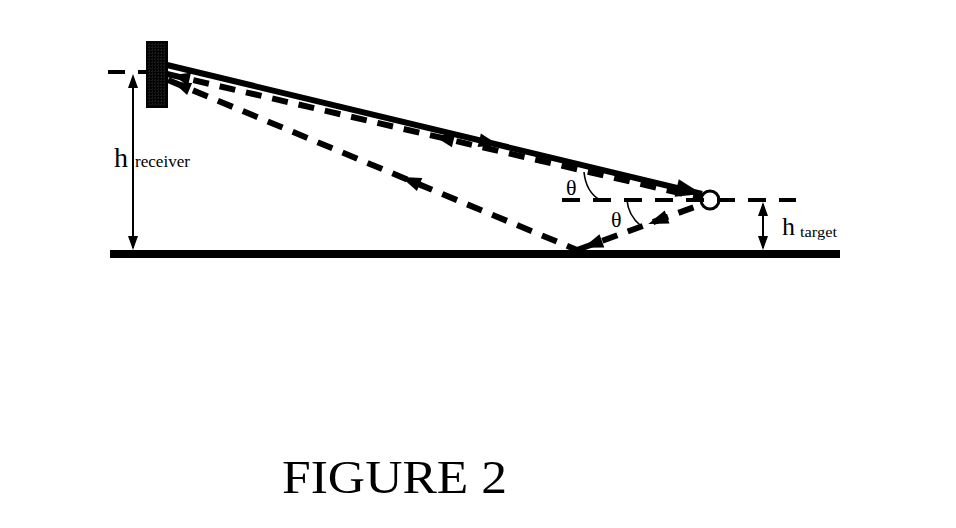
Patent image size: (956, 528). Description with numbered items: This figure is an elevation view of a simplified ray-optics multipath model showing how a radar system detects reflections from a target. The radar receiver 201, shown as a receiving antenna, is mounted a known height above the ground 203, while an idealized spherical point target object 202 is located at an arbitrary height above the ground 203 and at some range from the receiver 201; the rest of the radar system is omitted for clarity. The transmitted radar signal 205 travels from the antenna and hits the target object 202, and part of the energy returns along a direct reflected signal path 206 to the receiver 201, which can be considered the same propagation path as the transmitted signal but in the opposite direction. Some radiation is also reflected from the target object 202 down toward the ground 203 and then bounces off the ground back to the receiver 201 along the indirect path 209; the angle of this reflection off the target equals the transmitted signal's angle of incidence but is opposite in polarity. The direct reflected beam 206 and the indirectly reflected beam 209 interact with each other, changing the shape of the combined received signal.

The radar receiver 201 is at (148, 57).
The target object 202 is at (719, 193).
The ground 203 is at (393, 259).
The transmitted radar signal 205 is at (412, 112).
The direct reflected signal path 206 is at (473, 155).
The indirectly reflected beam 209 is at (398, 192).